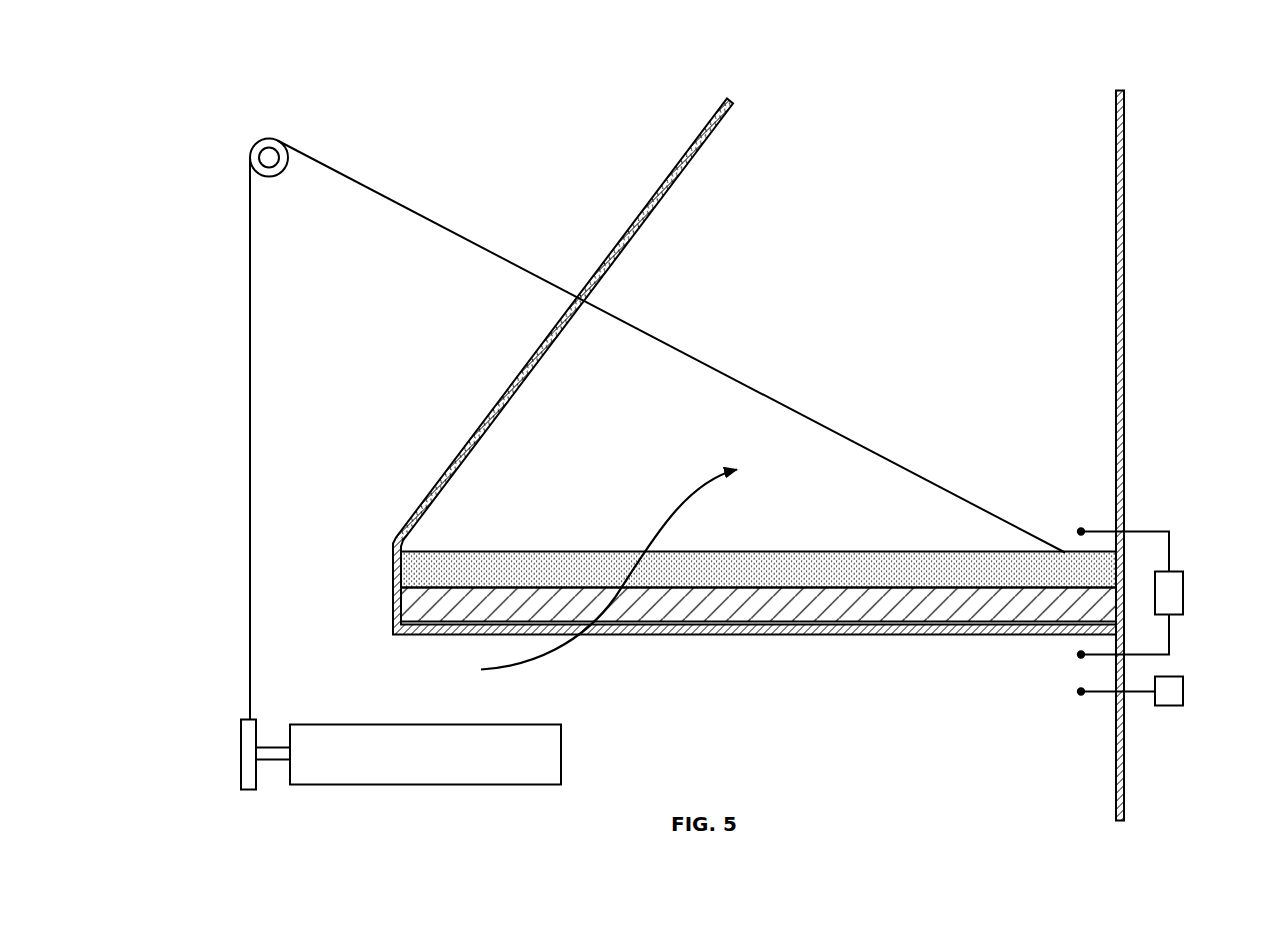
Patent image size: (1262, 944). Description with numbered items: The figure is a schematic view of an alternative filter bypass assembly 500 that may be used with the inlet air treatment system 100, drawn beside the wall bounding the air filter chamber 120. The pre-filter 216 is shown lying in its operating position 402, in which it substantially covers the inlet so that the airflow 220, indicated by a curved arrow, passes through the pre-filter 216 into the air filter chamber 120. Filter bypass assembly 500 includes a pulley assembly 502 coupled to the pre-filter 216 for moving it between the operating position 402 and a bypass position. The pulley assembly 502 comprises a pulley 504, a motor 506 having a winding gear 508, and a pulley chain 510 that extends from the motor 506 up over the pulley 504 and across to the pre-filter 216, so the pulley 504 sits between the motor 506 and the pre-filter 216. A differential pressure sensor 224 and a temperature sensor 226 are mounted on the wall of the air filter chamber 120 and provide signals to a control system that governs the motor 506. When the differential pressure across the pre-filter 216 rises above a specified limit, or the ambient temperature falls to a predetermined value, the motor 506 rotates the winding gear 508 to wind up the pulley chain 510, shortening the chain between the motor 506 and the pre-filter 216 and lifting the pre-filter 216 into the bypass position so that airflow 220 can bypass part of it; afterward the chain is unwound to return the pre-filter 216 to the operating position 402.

The inlet air treatment system 100 is at (1104, 69).
The air filter chamber 120 is at (1208, 247).
The pre-filter 216 is at (923, 549).
The airflow 220 is at (680, 493).
The differential pressure sensor 224 is at (1172, 569).
The temperature sensor 226 is at (1170, 674).
The operating position 402 is at (919, 423).
The filter bypass assembly 500 is at (489, 123).
The pulley assembly 502 is at (224, 405).
The pulley 504 is at (267, 136).
The motor 506 is at (345, 722).
The winding gear 508 is at (242, 717).
The pulley chain 510 is at (247, 324).